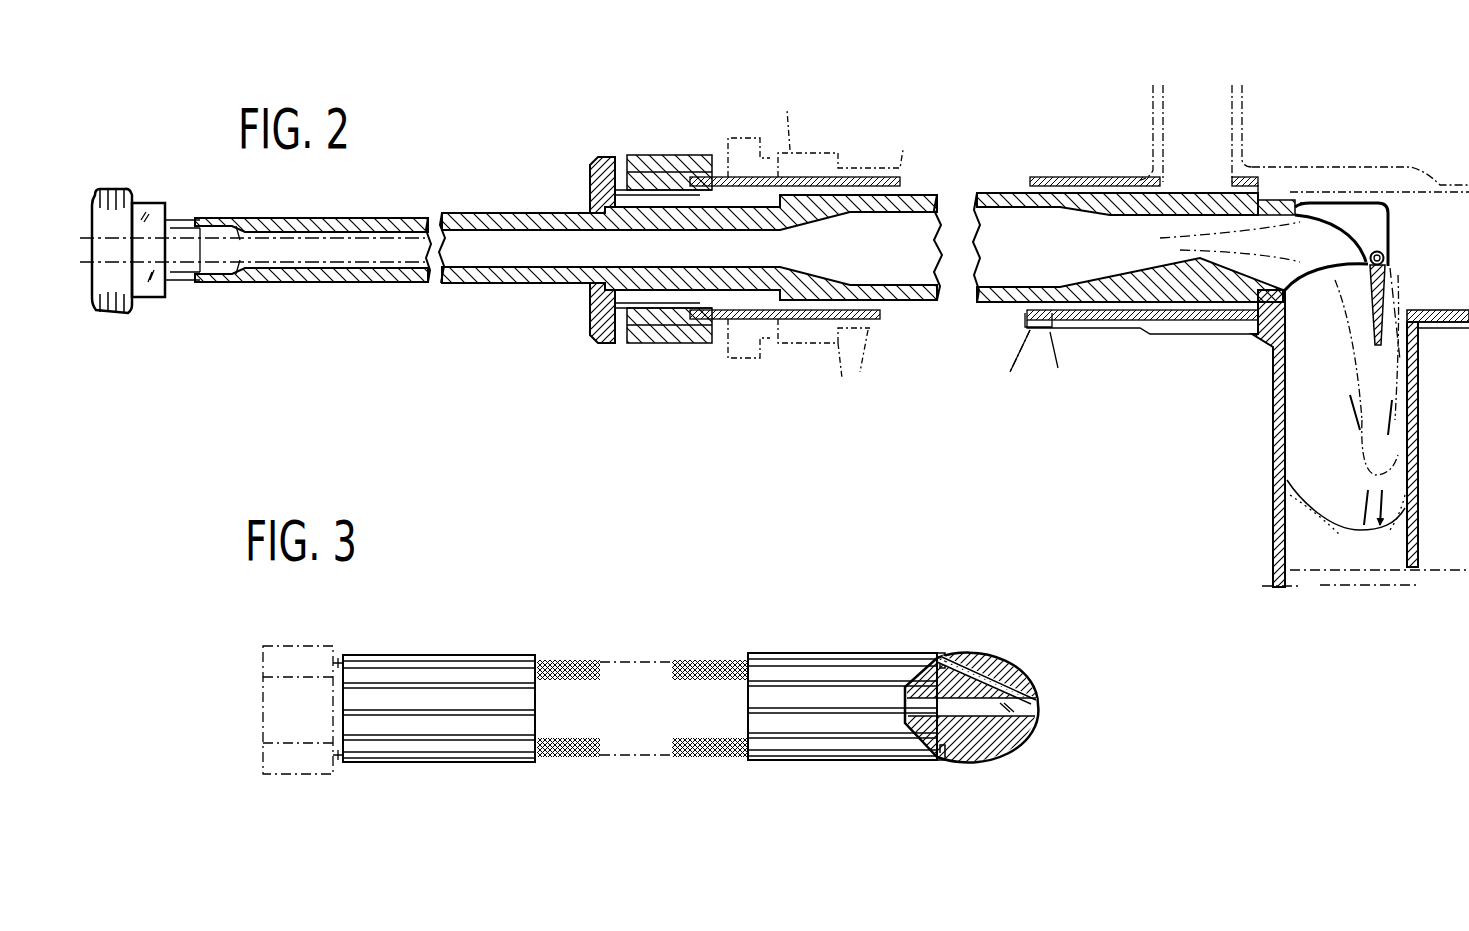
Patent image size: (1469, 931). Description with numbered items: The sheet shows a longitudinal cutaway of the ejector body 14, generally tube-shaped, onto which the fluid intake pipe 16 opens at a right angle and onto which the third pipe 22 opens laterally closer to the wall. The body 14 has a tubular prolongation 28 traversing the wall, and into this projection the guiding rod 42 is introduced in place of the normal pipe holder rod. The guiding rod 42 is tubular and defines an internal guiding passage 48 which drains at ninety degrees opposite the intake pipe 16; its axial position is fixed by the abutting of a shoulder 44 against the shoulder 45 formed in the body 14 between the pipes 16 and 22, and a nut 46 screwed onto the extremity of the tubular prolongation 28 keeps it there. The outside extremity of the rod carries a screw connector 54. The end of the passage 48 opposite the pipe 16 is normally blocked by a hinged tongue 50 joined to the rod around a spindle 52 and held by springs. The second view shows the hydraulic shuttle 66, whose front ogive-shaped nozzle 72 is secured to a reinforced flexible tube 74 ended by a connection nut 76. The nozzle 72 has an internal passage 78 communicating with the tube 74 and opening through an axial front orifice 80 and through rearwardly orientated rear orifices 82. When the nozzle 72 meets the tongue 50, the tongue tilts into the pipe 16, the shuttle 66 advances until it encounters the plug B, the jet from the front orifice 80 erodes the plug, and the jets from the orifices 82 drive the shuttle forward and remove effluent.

In FIG. 2, the body 14 is at (1447, 155).
In FIG. 2, the fluid intake pipe 16 is at (1275, 433).
In FIG. 2, the third pipe 22 is at (1287, 113).
In FIG. 2, the tubular prolongation 28 is at (848, 177).
In FIG. 2, the guiding rod 42 is at (662, 205).
In FIG. 2, the shoulder 44 is at (1268, 192).
In FIG. 2, the shoulder 45 is at (1227, 321).
In FIG. 2, the nut 46 is at (672, 345).
In FIG. 2, the internal guiding passage 48 is at (1000, 212).
In FIG. 2, the hinged tongue 50 is at (1388, 284).
In FIG. 2, the spindle 52 is at (1392, 217).
In FIG. 2, the connector 54 is at (116, 313).
In FIG. 2, the hydraulic shuttle 66 is at (1435, 458).
In FIG. 3, the hydraulic shuttle 66 is at (815, 597).
In FIG. 3, the ogive-shaped nozzle 72 is at (977, 762).
In FIG. 3, the reinforced flexible tube 74 is at (482, 760).
In FIG. 3, the connection nut 76 is at (310, 775).
In FIG. 3, the internal passage 78 is at (1015, 745).
In FIG. 3, the front orifice 80 is at (1042, 705).
In FIG. 3, the rear orifices 82 is at (1003, 672).
In FIG. 2, the plug B is at (1330, 520).